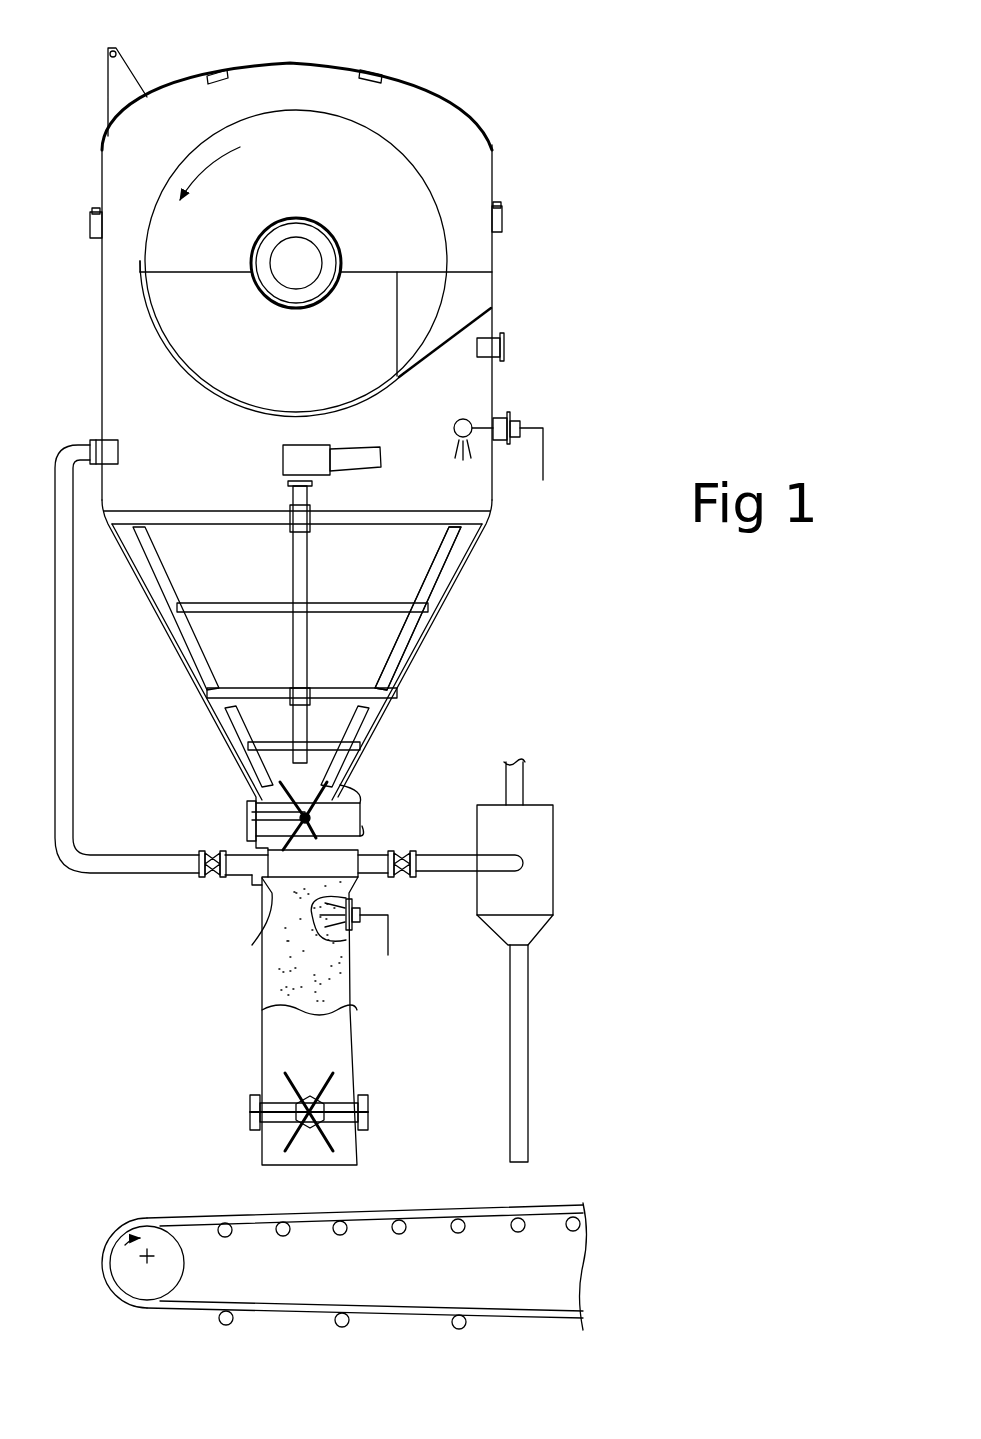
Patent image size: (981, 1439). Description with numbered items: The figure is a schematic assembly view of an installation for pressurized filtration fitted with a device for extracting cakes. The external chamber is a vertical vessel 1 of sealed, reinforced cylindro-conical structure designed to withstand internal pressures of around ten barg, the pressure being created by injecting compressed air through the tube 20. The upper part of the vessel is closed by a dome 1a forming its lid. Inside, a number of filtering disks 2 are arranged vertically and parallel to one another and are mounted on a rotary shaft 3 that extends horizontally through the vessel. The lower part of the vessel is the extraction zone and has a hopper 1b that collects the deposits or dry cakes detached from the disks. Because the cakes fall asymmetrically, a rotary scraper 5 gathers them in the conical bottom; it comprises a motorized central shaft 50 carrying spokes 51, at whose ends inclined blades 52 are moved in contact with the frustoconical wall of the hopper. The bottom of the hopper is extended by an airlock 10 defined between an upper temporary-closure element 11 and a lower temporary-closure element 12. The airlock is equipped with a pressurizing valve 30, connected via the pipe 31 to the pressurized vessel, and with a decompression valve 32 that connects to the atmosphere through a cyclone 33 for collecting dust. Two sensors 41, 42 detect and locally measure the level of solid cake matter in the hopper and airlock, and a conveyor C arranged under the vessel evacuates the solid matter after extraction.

The vertical vessel 1 is at (464, 78).
The dome 1a is at (260, 64).
The hopper 1b is at (470, 561).
The filtering disks 2 is at (392, 212).
The rotary shaft 3 is at (296, 263).
The rotary scraper 5 is at (328, 604).
The airlock 10 is at (248, 980).
The upper temporary-closure element 11 is at (245, 821).
The lower temporary-closure element 12 is at (372, 1120).
The tube 20 is at (512, 346).
The pressurizing valve 30 is at (220, 880).
The pipe 31 is at (68, 735).
The decompression valve 32 is at (394, 853).
The cyclone 33 is at (528, 868).
The sensor 41 is at (516, 440).
The sensor 42 is at (362, 934).
The motorized central shaft 50 is at (300, 590).
The spokes 51 is at (208, 602).
The inclined blades 52 is at (408, 657).
The conveyor C is at (257, 1203).